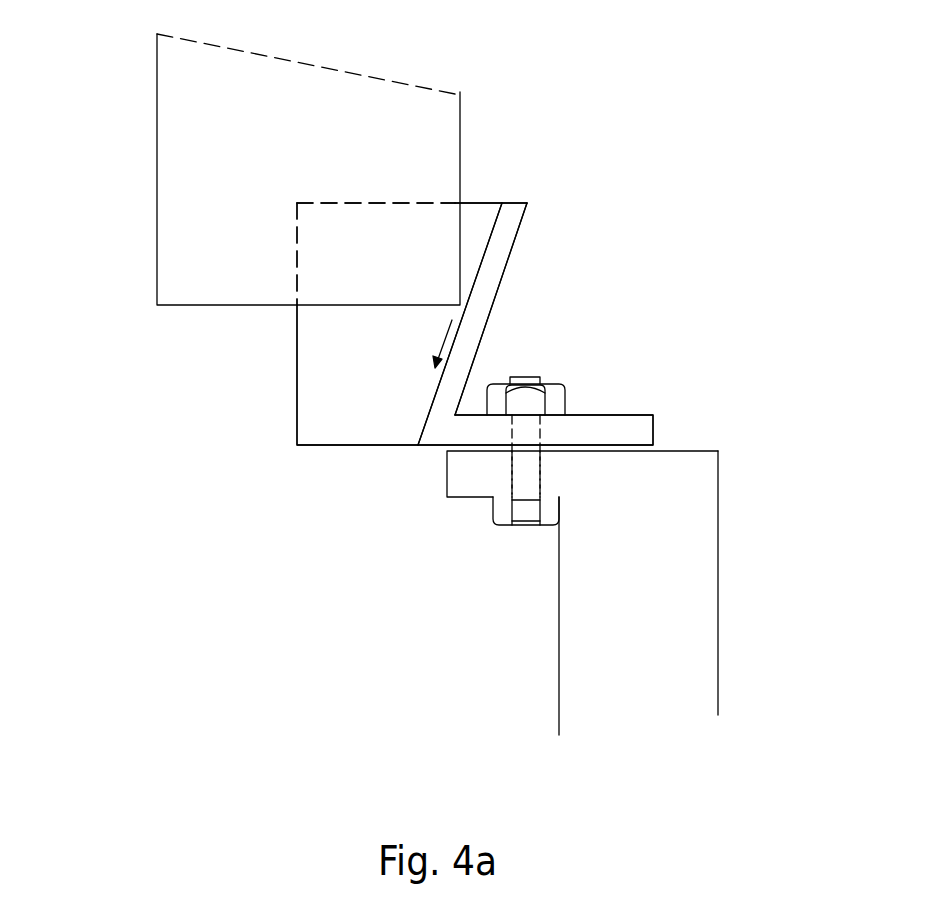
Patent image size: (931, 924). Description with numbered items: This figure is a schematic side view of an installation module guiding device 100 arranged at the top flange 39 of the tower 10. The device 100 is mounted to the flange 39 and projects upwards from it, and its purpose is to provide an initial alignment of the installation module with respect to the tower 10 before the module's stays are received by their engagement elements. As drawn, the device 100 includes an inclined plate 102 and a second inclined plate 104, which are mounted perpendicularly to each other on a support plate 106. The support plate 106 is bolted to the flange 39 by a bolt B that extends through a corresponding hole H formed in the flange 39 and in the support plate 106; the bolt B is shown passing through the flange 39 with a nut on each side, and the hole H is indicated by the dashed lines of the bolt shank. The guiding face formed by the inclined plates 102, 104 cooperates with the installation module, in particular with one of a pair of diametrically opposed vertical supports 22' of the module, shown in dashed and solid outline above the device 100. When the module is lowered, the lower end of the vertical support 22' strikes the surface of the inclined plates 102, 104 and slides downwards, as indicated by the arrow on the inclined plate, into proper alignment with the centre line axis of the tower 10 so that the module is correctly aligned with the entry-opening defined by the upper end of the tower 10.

The vertical support 22' is at (262, 169).
The installation module guiding device 100 is at (520, 229).
The inclined plate 102 is at (322, 355).
The inclined plate 104 is at (470, 333).
The support plate 106 is at (627, 423).
The bolt B is at (518, 438).
The hole H is at (540, 470).
The flange 39 is at (470, 483).
The tower 10 is at (695, 603).